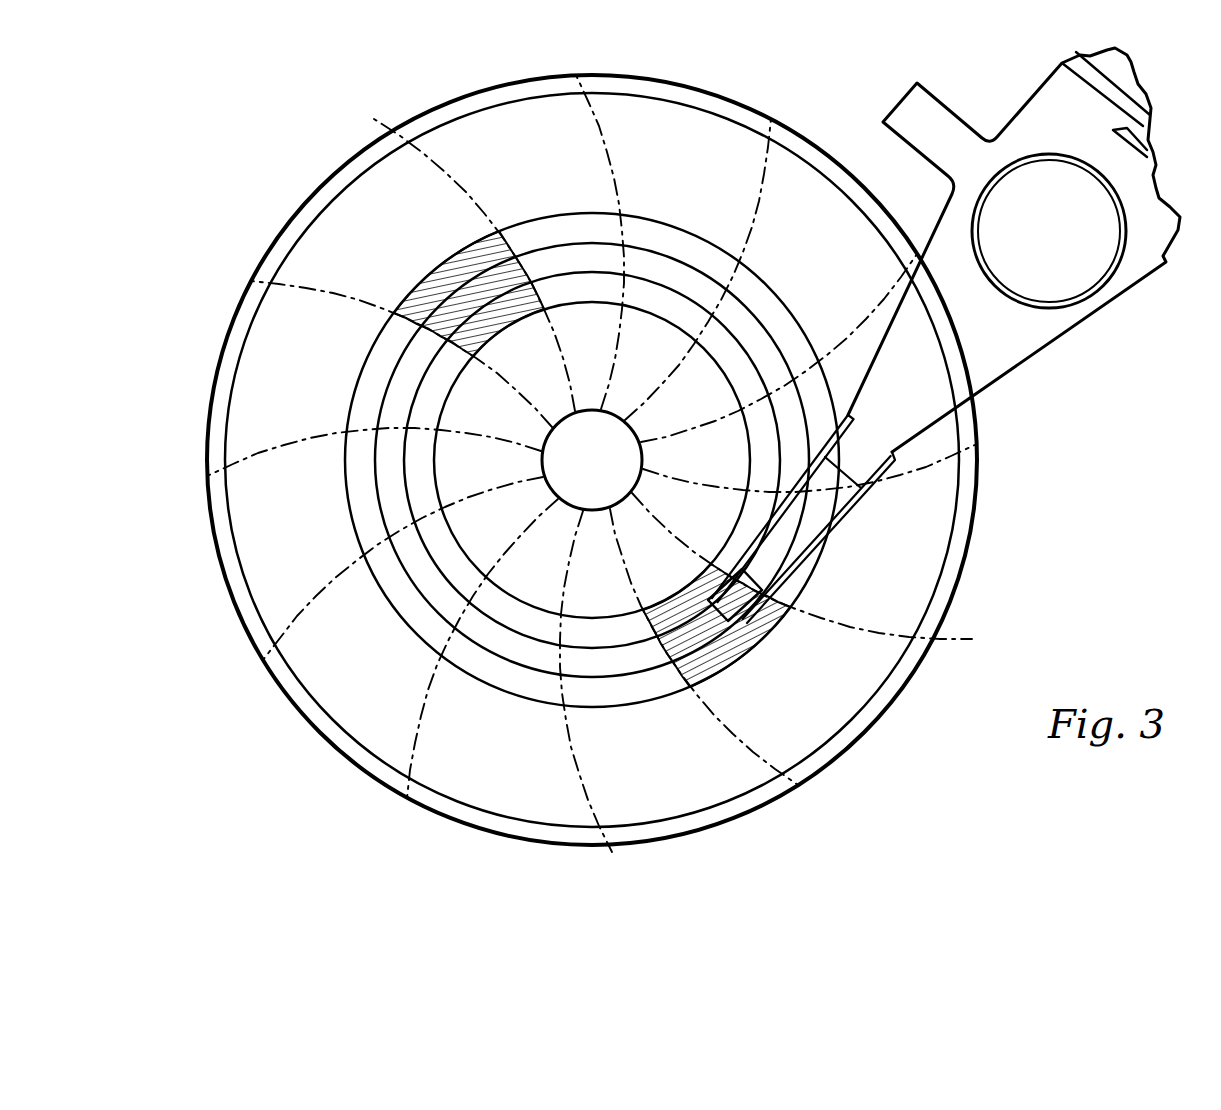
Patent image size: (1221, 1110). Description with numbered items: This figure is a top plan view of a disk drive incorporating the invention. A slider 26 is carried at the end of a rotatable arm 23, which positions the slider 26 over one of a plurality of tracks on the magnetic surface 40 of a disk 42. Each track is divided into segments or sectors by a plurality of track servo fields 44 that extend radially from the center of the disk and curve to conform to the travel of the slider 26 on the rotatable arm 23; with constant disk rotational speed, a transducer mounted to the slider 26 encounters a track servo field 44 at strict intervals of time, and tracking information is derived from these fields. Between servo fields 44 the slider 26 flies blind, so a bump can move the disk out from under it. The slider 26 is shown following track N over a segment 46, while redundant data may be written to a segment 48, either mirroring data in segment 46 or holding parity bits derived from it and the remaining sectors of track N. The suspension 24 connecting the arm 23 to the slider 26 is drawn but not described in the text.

The magnetic surface 40 is at (338, 172).
The disk 42 is at (264, 258).
The track servo fields 44 is at (374, 119).
The segment 46 is at (688, 648).
The segment 48 is at (483, 288).
The arm 23 is at (896, 318).
The suspension 24 is at (768, 552).
The slider 26 is at (762, 620).